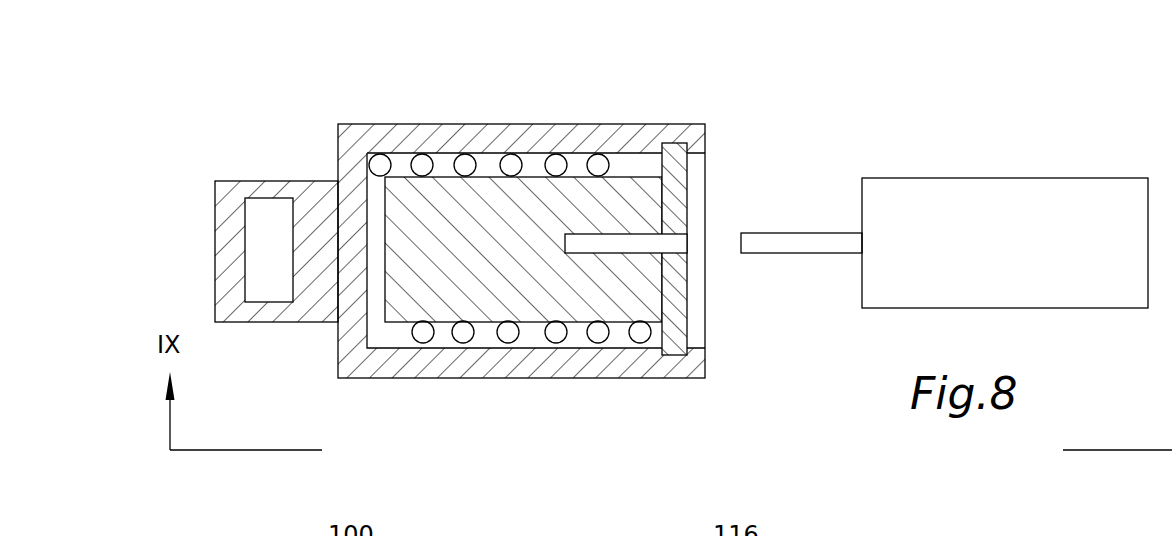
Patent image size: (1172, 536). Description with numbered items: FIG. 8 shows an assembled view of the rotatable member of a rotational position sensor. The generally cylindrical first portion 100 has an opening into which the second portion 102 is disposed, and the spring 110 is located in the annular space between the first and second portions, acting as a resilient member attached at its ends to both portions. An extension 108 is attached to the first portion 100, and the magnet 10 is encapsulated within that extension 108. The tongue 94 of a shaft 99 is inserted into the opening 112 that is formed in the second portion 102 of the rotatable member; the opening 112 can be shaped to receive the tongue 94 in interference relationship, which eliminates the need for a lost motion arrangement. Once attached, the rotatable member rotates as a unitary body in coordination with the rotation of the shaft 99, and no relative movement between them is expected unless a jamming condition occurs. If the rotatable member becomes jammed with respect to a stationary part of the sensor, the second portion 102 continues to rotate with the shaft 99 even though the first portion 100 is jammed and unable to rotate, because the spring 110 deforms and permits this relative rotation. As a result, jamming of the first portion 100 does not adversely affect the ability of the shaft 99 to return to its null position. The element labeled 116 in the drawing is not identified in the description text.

The magnet 10 is at (254, 245).
The extension 108 is at (323, 190).
The first portion 100 is at (418, 135).
The second portion 102 is at (440, 203).
The spring 110 is at (423, 335).
The opening 112 is at (623, 243).
The end plate 116 is at (693, 157).
The tongue 94 is at (768, 245).
The shaft 99 is at (1033, 200).